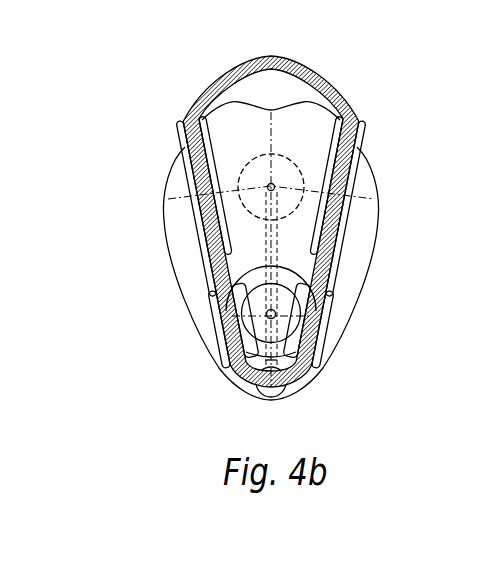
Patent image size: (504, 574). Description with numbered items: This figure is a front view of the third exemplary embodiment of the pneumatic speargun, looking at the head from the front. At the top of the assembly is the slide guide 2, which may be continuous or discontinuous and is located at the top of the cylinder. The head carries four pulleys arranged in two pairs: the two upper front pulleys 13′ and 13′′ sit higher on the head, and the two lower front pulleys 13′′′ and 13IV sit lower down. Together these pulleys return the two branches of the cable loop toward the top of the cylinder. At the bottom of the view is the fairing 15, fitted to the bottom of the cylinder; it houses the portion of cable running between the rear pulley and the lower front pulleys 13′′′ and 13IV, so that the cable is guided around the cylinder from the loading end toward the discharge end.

The slide guide 2 is at (271, 110).
The upper front pulley 13′ is at (362, 152).
The upper front pulley 13′′ is at (182, 165).
The lower front pulley 13′′′ is at (326, 320).
The lower front pulley 13IV is at (214, 322).
The fairing 15 is at (247, 390).